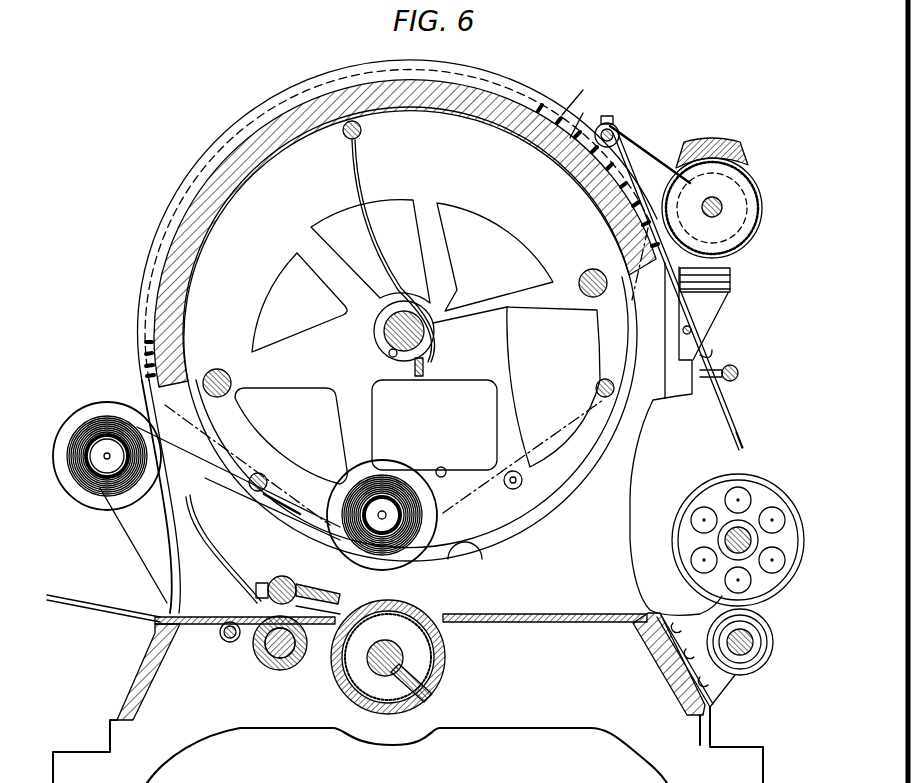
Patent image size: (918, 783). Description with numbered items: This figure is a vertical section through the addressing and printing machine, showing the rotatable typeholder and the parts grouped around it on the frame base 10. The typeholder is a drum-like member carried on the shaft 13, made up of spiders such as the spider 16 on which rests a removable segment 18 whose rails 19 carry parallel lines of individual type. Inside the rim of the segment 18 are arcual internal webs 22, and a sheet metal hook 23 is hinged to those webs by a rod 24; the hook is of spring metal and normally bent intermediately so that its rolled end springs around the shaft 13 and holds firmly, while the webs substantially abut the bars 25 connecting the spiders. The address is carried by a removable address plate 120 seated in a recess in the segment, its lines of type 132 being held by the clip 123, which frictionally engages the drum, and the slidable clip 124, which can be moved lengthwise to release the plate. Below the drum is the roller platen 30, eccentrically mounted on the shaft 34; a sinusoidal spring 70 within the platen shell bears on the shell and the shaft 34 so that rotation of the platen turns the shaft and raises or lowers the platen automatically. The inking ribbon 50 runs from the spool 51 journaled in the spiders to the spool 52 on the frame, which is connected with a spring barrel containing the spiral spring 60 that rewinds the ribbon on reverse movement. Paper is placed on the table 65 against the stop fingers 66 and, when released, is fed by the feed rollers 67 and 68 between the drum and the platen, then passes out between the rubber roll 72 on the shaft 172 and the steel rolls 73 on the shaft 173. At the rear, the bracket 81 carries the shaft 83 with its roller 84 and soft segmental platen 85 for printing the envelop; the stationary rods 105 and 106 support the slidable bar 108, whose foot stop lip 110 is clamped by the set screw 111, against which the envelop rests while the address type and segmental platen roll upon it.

The base 10 is at (408, 523).
The shaft 13 is at (434, 339).
The spider 16 is at (526, 318).
The removable segment 18 is at (372, 78).
The rails 19 is at (556, 104).
The arcual internal webs 22 is at (402, 272).
The sheet metal hook 23 is at (362, 188).
The rod 24 is at (362, 131).
The bars 25 is at (222, 362).
The roller platen 30 is at (424, 614).
The shaft 34 is at (385, 648).
The inking ribbon 50 is at (290, 106).
The spool 51 is at (406, 474).
The spool 52 is at (112, 400).
The spiral spring 60 is at (434, 425).
The table 65 is at (92, 598).
The stop fingers 66 is at (308, 612).
The feed roller 67 is at (278, 670).
The feed roller 68 is at (298, 580).
The sinusoidal spring 70 is at (436, 672).
The rubber roll 72 is at (770, 630).
The steel rolls 73 is at (782, 586).
The bracket 81 is at (718, 298).
The shaft 83 is at (713, 218).
The roller 84 is at (762, 196).
The segmental platen 85 is at (716, 140).
The stationary rod 105 is at (618, 129).
The stationary rod 106 is at (693, 331).
The slidable bar 108 is at (728, 406).
The lip 110 is at (716, 354).
The set screw 111 is at (738, 375).
The address plate 120 is at (624, 164).
The clip 123 is at (582, 92).
The slidable clip 124 is at (628, 170).
The lines of type 132 is at (590, 116).
The shaft 172 is at (752, 648).
The shaft 173 is at (730, 541).